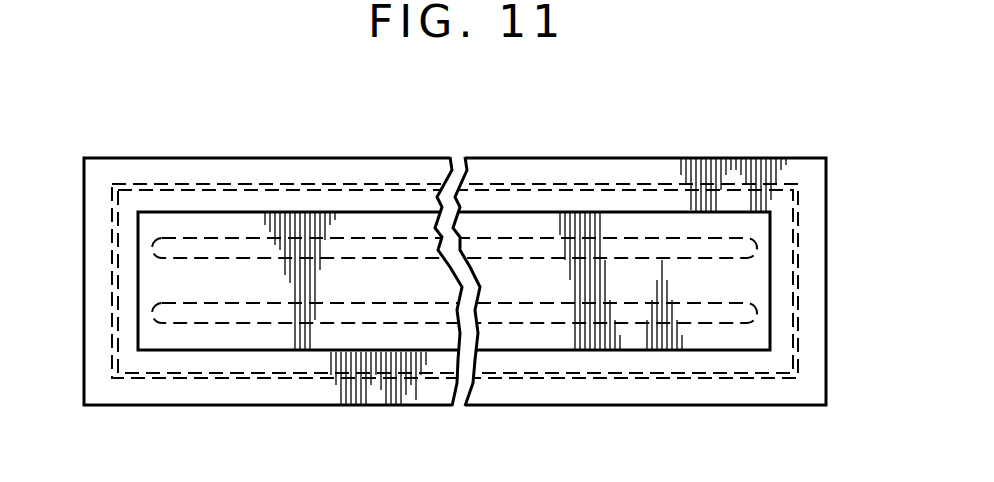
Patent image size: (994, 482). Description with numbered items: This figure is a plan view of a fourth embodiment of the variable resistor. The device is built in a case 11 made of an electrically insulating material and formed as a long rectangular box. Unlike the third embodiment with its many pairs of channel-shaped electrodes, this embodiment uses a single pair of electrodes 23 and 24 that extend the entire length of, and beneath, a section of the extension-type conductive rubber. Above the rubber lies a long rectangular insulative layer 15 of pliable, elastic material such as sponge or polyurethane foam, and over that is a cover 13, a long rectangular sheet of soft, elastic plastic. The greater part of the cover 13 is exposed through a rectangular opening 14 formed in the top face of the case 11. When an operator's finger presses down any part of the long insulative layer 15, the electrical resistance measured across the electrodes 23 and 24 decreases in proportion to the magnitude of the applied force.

The case 11 is at (128, 170).
The cover 13 is at (535, 227).
The rectangular opening 14 is at (394, 218).
The insulative layer 15 is at (277, 185).
The electrode 23 is at (242, 313).
The electrode 24 is at (250, 247).